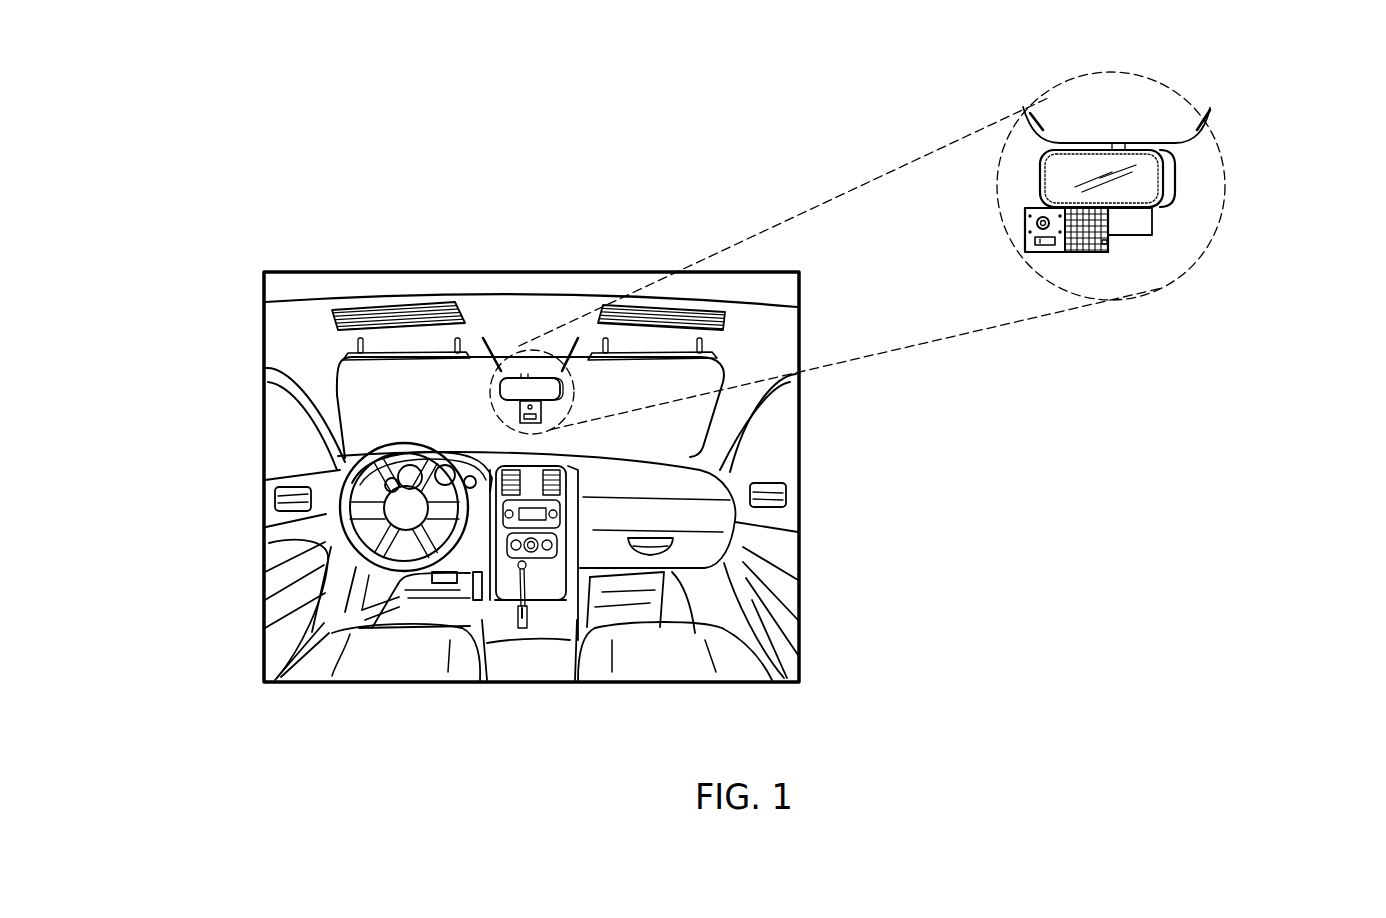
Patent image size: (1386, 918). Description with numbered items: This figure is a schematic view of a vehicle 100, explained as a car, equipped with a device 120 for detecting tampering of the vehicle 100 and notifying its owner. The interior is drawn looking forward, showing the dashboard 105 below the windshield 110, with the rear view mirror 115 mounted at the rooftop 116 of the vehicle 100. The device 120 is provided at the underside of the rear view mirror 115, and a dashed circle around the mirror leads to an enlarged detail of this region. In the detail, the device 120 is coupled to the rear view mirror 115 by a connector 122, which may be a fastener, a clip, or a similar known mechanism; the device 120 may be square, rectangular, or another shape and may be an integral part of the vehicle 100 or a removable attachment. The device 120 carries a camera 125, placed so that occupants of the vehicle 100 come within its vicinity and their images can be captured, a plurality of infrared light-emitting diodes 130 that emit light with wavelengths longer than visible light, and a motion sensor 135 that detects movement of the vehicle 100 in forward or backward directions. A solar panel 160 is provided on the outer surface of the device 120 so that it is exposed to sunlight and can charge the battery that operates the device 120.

The vehicle 100 is at (264, 98).
The dashboard 105 is at (640, 481).
The windshield 110 is at (712, 408).
The rear view mirror 115 is at (508, 382).
The rooftop 116 is at (318, 312).
The device 120 is at (505, 413).
The connector 122 is at (1152, 224).
The camera 125 is at (1025, 222).
The infrared light-emitting diodes 130 is at (1062, 252).
The motion sensor 135 is at (1043, 252).
The solar panel 160 is at (1108, 243).